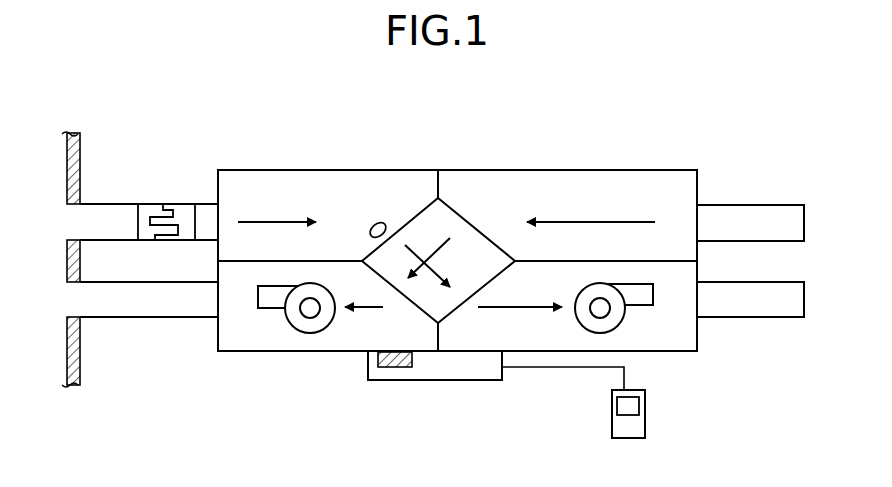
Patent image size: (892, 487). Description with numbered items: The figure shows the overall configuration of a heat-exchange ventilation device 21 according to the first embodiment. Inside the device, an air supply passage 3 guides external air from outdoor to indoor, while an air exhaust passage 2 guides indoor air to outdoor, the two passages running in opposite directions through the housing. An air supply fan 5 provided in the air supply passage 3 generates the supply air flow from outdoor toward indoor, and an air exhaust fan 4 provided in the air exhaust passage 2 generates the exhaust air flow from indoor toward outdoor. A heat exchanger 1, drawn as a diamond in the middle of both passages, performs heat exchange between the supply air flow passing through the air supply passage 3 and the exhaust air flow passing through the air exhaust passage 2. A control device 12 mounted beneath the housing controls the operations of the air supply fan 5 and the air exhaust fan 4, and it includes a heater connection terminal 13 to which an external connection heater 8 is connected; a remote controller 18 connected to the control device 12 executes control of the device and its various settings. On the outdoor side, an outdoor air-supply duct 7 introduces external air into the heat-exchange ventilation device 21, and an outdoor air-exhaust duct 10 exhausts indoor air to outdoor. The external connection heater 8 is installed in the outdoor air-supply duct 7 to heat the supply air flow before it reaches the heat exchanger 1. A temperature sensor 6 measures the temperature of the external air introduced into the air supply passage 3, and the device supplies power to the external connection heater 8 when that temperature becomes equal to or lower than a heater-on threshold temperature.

The heat exchanger 1 is at (470, 218).
The air exhaust passage 2 is at (617, 222).
The air supply passage 3 is at (277, 222).
The air exhaust fan 4 is at (292, 329).
The air supply fan 5 is at (600, 333).
The temperature sensor 6 is at (378, 224).
The outdoor air-supply duct 7 is at (118, 213).
The external connection heater 8 is at (165, 204).
The outdoor air-exhaust duct 10 is at (168, 317).
The control device 12 is at (465, 380).
The heater connection terminal 13 is at (393, 367).
The remote controller 18 is at (647, 421).
The heat-exchange ventilation device 21 is at (307, 158).